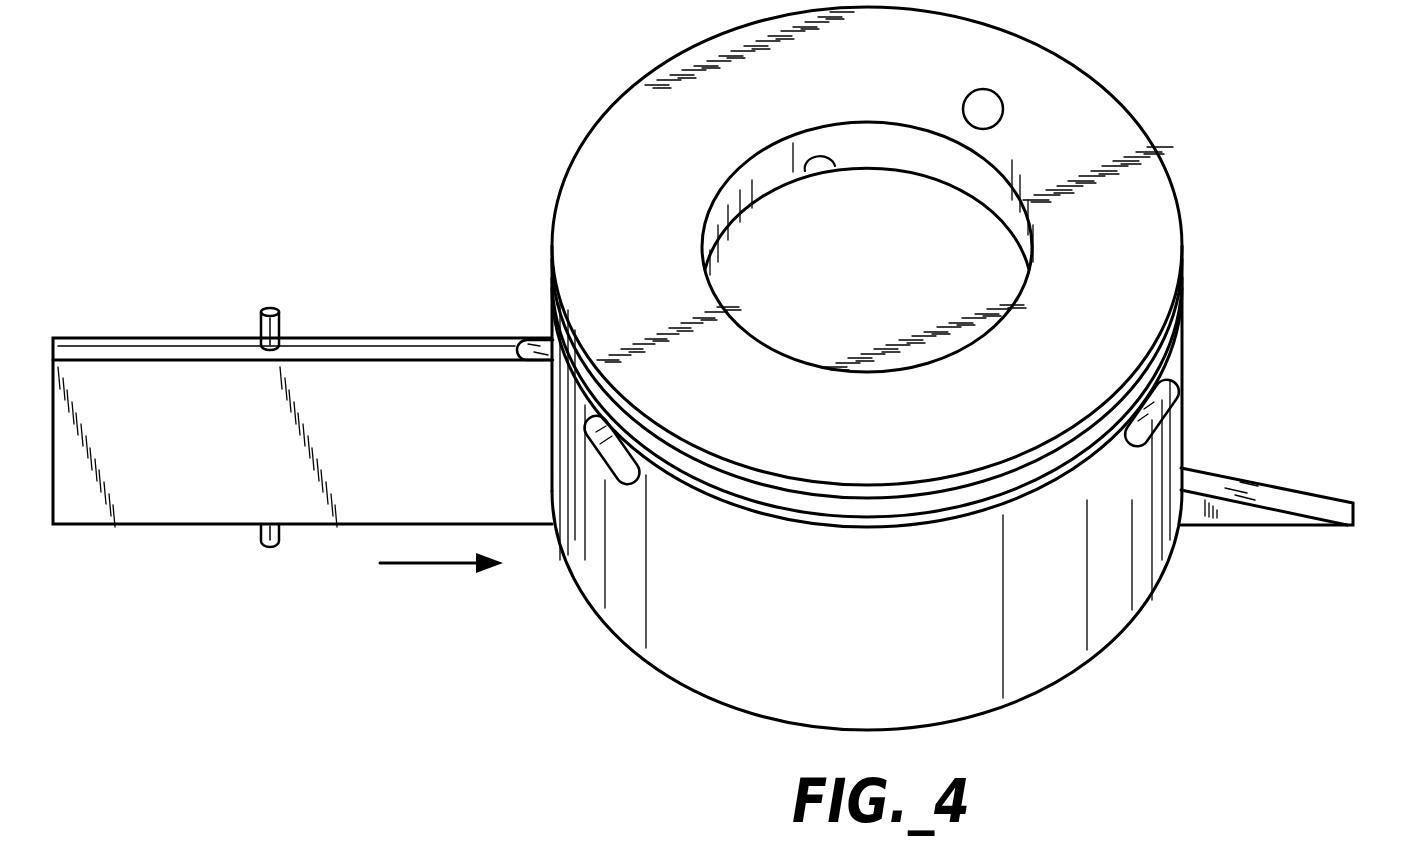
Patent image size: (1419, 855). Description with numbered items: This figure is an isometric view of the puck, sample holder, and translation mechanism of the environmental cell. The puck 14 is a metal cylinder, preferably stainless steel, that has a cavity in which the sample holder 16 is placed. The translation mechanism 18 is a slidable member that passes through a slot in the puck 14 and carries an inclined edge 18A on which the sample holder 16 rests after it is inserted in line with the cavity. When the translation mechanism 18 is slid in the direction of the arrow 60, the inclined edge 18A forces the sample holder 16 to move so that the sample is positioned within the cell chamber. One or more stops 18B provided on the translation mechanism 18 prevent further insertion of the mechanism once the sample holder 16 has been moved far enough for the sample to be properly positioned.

The puck 14 is at (1107, 617).
The sample holder 16 is at (733, 277).
The translation mechanism 18 is at (455, 372).
The inclined edge 18A is at (1280, 497).
The stops 18B is at (268, 310).
The arrow 60 is at (438, 566).